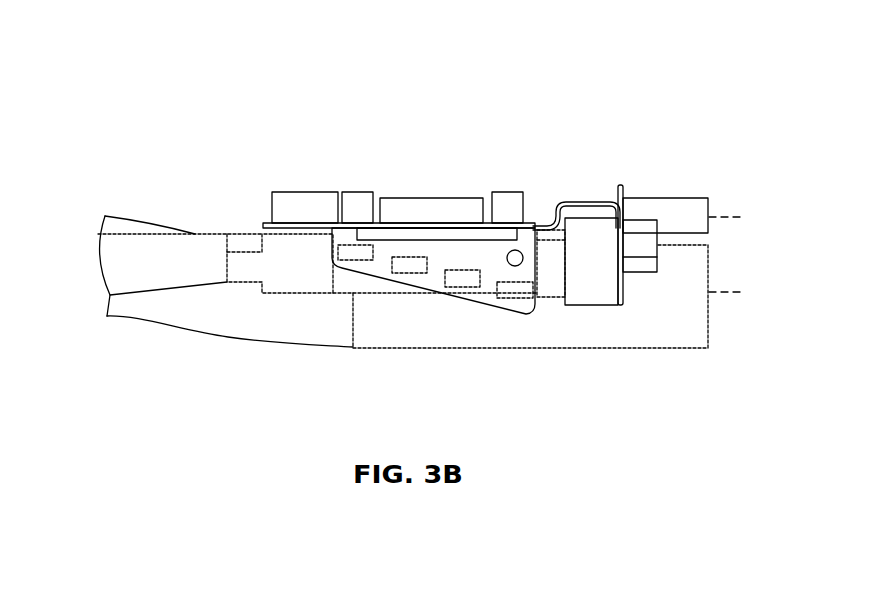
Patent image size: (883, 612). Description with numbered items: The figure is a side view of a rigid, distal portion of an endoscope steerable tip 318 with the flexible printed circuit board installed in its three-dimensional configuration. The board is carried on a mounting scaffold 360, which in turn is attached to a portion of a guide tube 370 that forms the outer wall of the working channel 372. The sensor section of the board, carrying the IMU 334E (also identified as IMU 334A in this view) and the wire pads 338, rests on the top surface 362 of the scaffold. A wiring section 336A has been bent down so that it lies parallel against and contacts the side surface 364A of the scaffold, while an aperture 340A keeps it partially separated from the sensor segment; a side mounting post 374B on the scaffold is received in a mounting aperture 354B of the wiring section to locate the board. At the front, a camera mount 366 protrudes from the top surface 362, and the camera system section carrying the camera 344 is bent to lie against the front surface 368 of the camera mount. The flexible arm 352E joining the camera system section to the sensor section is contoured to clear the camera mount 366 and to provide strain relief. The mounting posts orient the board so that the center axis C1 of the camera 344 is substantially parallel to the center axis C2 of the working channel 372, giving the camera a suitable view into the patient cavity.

The endoscope steerable tip 318 is at (686, 80).
The IMU 334A is at (280, 193).
The IMU 334E is at (395, 200).
The wiring section 336A is at (528, 305).
The wire pads 338 is at (405, 265).
The aperture 340A is at (372, 228).
The camera 344 is at (670, 199).
The flexible arm 352E is at (567, 204).
The mounting aperture 354B is at (521, 246).
The mounting scaffold 360 is at (272, 290).
The top surface 362 is at (286, 242).
The side surface 364A is at (345, 292).
The camera mount 366 is at (592, 219).
The front surface 368 is at (609, 284).
The guide tube 370 is at (678, 336).
The working channel 372 is at (726, 319).
The side mounting post 374B is at (503, 252).
The center axis of camera C1 is at (743, 219).
The center axis of working channel lumen C2 is at (743, 293).